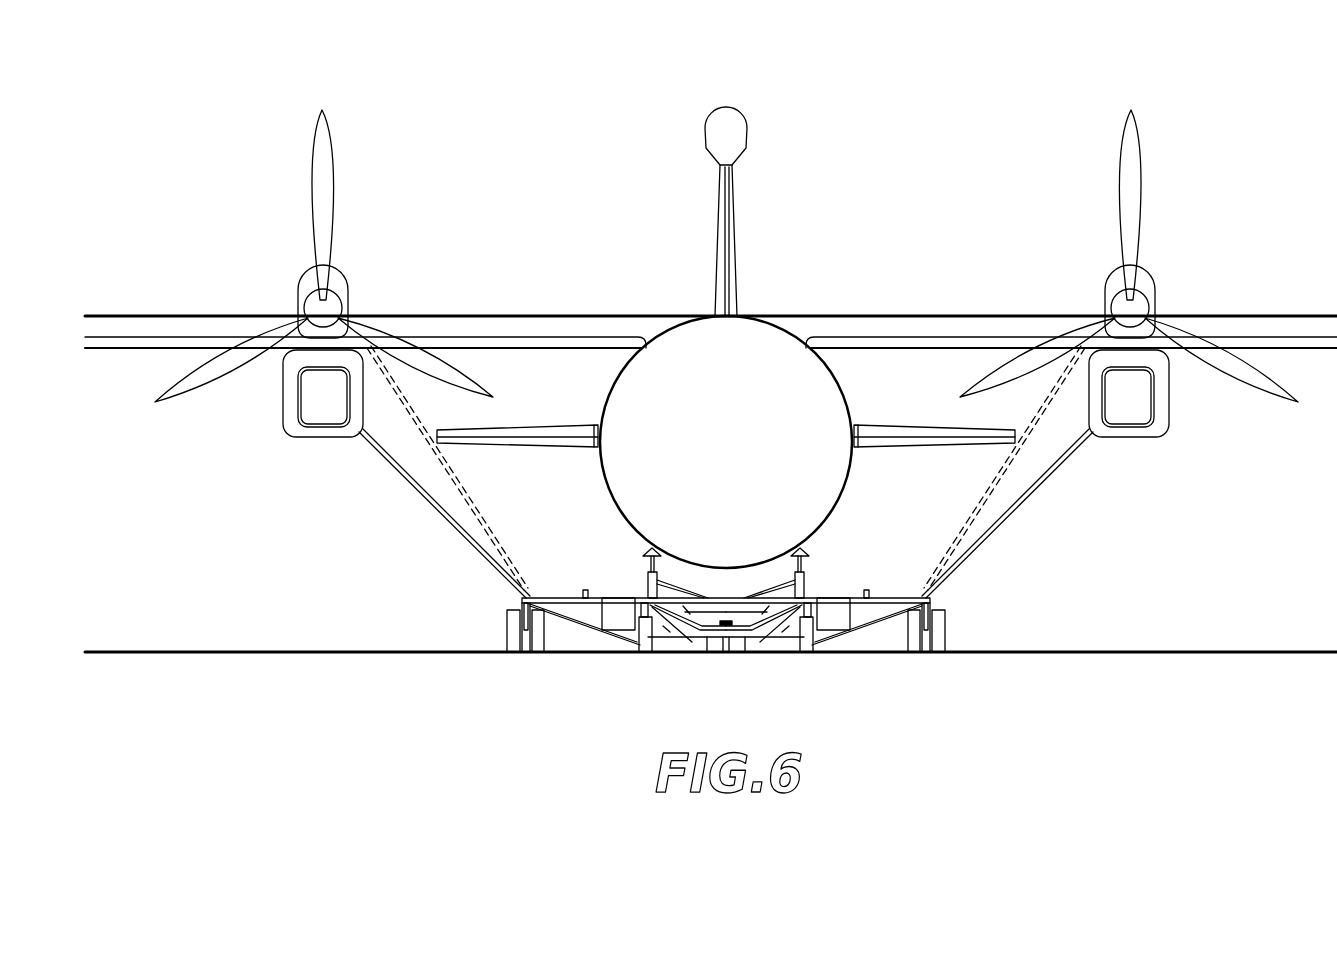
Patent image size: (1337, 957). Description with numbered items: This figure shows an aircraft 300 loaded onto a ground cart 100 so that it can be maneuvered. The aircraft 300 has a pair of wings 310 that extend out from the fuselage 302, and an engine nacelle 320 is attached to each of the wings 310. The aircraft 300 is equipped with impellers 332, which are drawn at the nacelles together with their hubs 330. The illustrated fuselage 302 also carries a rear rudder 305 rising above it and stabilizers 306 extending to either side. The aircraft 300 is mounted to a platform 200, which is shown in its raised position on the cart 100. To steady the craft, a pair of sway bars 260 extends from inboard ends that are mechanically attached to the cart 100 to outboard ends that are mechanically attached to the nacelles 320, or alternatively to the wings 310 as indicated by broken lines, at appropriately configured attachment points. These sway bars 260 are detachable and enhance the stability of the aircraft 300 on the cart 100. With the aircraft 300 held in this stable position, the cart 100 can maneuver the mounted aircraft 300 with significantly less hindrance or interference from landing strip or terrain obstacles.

The cart 100 is at (985, 622).
The platform 200 is at (823, 578).
The sway bars 260 is at (453, 484).
The aircraft 300 is at (947, 130).
The fuselage 302 is at (790, 322).
The rear rudder 305 is at (712, 238).
The stabilizers 306 is at (520, 432).
The wings 310 is at (537, 314).
The engine nacelle 320 is at (283, 432).
The propeller hub 330 is at (350, 290).
The impellers 332 is at (325, 183).